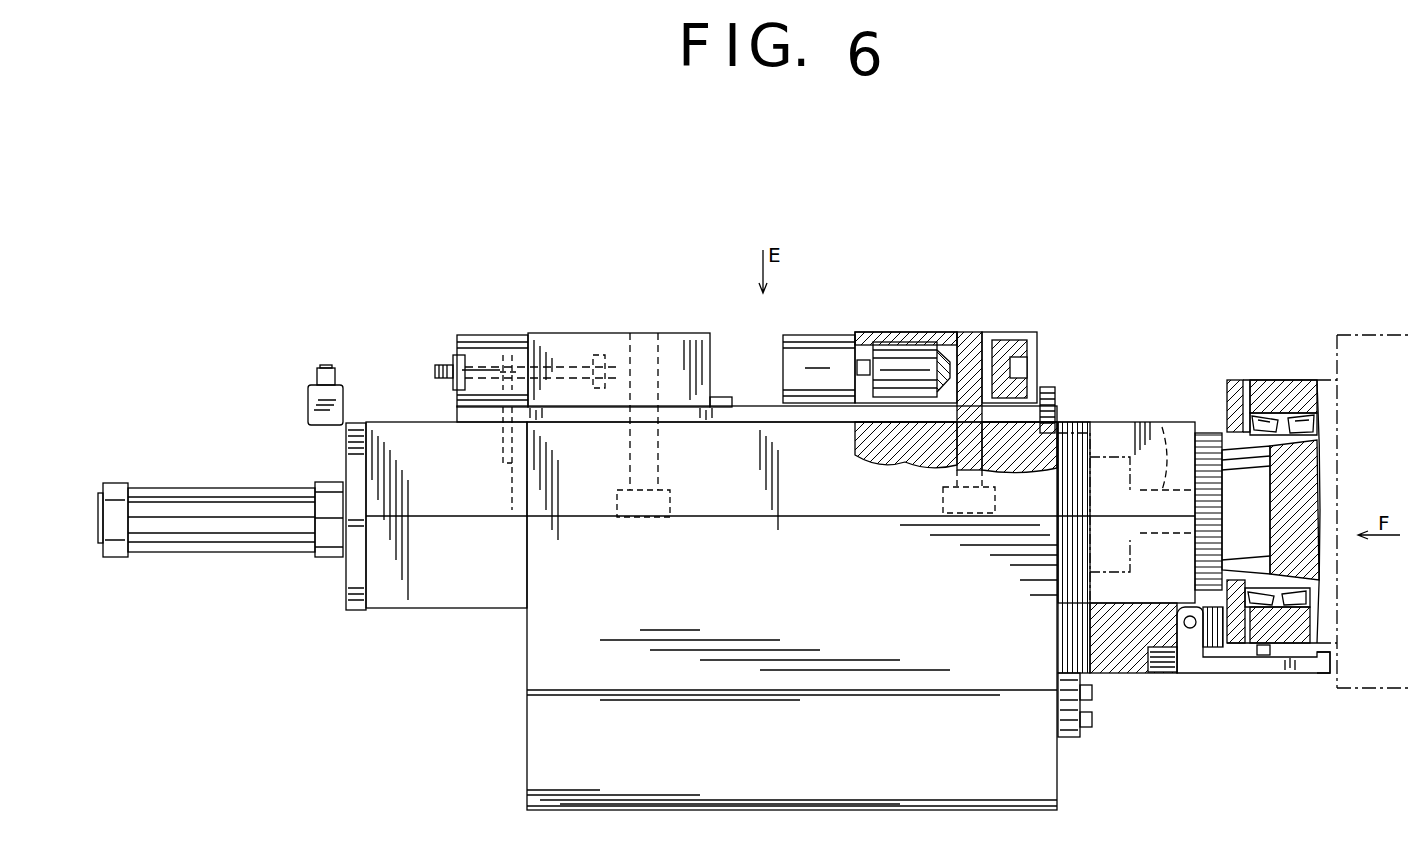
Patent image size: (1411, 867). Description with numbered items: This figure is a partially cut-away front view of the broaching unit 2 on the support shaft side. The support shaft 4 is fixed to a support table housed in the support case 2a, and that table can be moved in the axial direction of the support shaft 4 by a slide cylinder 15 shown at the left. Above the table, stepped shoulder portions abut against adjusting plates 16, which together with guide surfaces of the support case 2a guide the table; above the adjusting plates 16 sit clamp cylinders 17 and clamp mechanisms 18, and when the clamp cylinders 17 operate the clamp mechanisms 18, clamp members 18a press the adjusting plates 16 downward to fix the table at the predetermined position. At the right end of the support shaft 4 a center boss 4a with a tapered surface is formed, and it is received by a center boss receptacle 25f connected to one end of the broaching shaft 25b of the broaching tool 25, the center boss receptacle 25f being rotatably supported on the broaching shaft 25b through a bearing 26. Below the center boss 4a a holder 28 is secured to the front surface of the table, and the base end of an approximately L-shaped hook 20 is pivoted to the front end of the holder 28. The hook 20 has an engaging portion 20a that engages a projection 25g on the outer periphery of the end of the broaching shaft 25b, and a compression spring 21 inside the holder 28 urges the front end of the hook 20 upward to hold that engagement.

The broaching unit 2 is at (497, 698).
The support case 2a is at (530, 795).
The support shaft 4 is at (1158, 427).
The center boss 4a is at (1253, 500).
The slide cylinder 15 is at (198, 538).
The adjusting plate 16 is at (665, 505).
The clamp cylinder 17 is at (488, 350).
The clamp mechanism 18 is at (618, 338).
The clamp member 18a is at (975, 330).
The hook 20 is at (1248, 667).
The engaging portion 20a is at (1318, 675).
The compression spring 21 is at (1157, 672).
The broaching tool 25 is at (1382, 348).
The broaching shaft 25b is at (1288, 388).
The center boss receptacle 25f is at (1297, 465).
The projection 25g is at (1270, 657).
The bearing 26 is at (1270, 412).
The holder 28 is at (1115, 660).